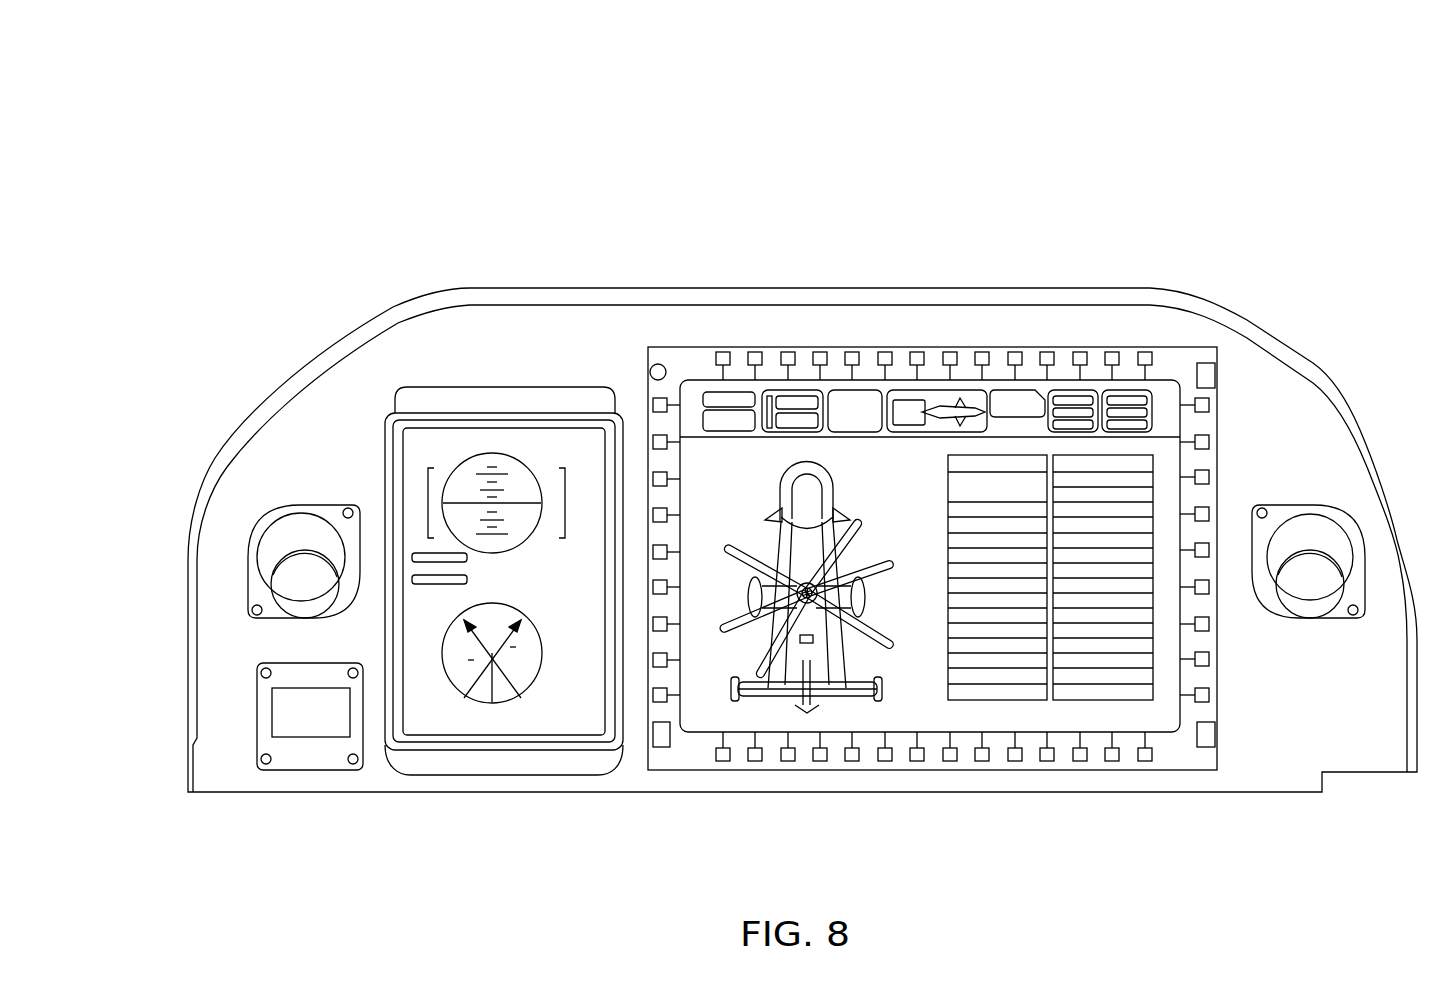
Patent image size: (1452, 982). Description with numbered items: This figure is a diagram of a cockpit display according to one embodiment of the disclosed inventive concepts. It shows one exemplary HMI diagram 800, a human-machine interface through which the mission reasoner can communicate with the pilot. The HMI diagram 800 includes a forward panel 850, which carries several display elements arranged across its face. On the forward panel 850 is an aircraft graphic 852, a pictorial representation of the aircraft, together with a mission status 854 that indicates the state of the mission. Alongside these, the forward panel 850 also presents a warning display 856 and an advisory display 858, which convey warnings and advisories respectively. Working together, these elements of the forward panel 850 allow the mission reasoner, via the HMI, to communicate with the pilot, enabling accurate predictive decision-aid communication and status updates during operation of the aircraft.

The HMI diagram 800 is at (157, 105).
The forward panel 850 is at (464, 248).
The aircraft graphic 852 is at (806, 487).
The mission status 854 is at (855, 391).
The warning display 856 is at (1003, 440).
The advisory display 858 is at (1105, 440).